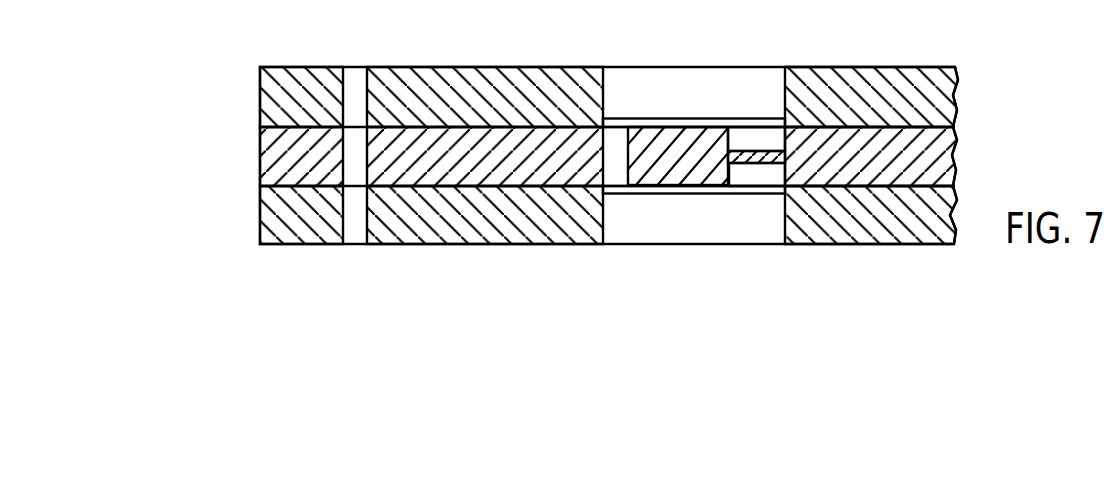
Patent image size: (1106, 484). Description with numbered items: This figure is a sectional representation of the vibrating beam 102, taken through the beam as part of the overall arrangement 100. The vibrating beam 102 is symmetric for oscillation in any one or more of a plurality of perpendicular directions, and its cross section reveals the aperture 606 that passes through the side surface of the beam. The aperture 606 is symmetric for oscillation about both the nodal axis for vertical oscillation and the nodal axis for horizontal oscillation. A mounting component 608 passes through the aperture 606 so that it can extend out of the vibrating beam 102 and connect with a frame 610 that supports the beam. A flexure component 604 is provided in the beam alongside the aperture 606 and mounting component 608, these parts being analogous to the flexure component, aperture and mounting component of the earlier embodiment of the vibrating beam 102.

The semiconductor device 100 is at (297, 53).
The vibrating beam 102 is at (424, 225).
The flexure component 604 is at (763, 163).
The aperture 606 is at (755, 121).
The mounting component 608 is at (690, 160).
The frame 610 is at (267, 216).